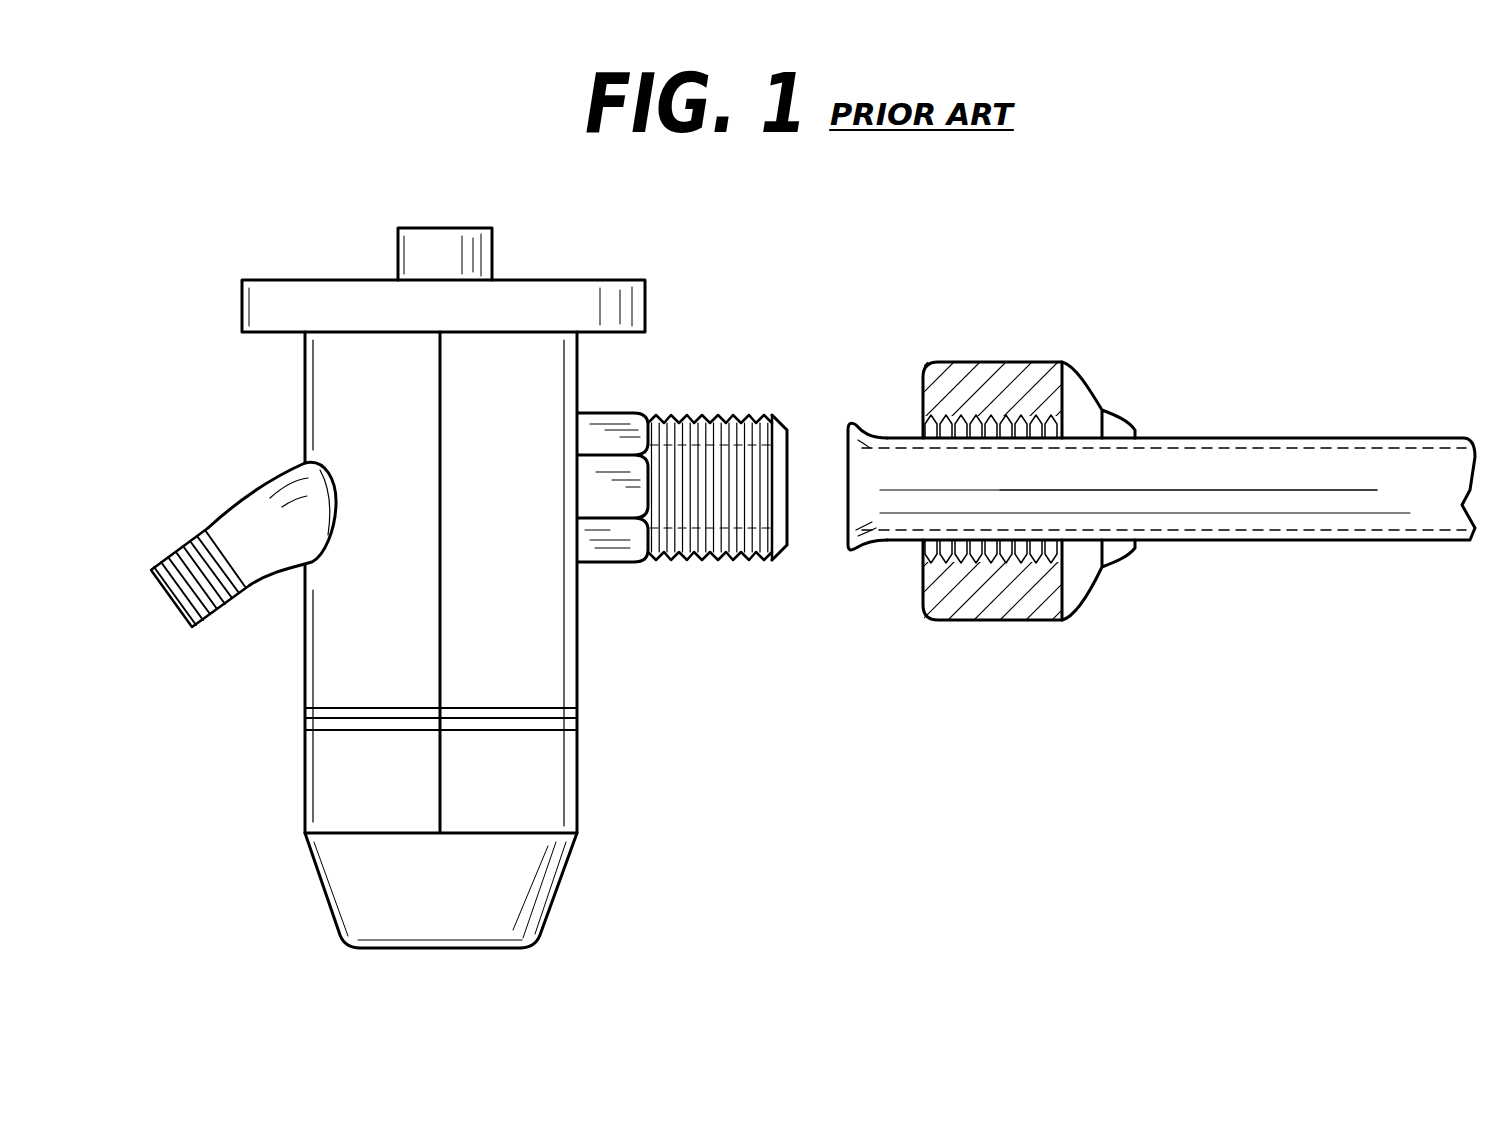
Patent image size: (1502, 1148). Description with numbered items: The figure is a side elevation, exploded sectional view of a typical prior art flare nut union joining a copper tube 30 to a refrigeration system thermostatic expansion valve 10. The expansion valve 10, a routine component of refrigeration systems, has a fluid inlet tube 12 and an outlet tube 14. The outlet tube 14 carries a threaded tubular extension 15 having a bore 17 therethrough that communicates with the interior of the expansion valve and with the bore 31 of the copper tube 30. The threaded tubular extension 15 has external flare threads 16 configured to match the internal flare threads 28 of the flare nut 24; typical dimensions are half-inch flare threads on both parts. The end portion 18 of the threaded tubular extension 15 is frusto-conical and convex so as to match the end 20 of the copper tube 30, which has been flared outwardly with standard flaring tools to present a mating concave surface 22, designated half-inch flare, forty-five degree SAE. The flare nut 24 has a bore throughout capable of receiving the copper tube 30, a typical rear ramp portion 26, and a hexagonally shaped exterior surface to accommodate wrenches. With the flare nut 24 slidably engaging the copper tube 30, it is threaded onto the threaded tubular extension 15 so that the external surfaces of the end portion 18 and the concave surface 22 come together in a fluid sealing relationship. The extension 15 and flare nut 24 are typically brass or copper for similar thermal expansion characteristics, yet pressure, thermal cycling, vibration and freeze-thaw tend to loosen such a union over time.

The thermostatic expansion valve 10 is at (285, 272).
The fluid inlet tube 12 is at (198, 645).
The outlet tube 14 is at (614, 405).
The threaded tubular extension 15 is at (740, 408).
The external flare threads 16 is at (712, 488).
The bore 17 is at (683, 462).
The end portion 18 is at (790, 550).
The end of the copper tube 20 is at (1032, 551).
The concave surface 22 is at (847, 542).
The flare nut 24 is at (985, 551).
The rear ramp portion 26 is at (1108, 396).
The internal flare threads 28 is at (1010, 550).
The copper tube 30 is at (1304, 430).
The bore of the copper tube 31 is at (1282, 503).